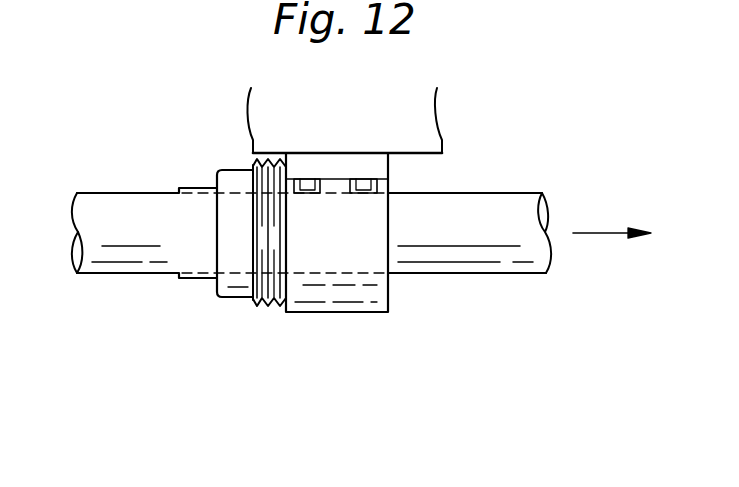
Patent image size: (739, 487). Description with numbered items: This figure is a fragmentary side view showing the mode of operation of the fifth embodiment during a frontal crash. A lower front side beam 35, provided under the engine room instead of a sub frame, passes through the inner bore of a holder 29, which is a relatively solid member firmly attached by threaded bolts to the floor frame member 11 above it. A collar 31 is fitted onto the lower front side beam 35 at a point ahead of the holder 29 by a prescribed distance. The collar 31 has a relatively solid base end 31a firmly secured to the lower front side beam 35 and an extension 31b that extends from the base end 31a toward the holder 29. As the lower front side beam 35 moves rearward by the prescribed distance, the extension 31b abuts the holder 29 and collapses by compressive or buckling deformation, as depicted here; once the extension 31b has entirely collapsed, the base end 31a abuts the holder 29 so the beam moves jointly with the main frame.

The floor frame member 11 is at (435, 137).
The holder 29 is at (347, 313).
The collar 31 is at (263, 286).
The base end 31a is at (242, 298).
The extension 31b is at (288, 261).
The lower front side beam 35 is at (115, 273).